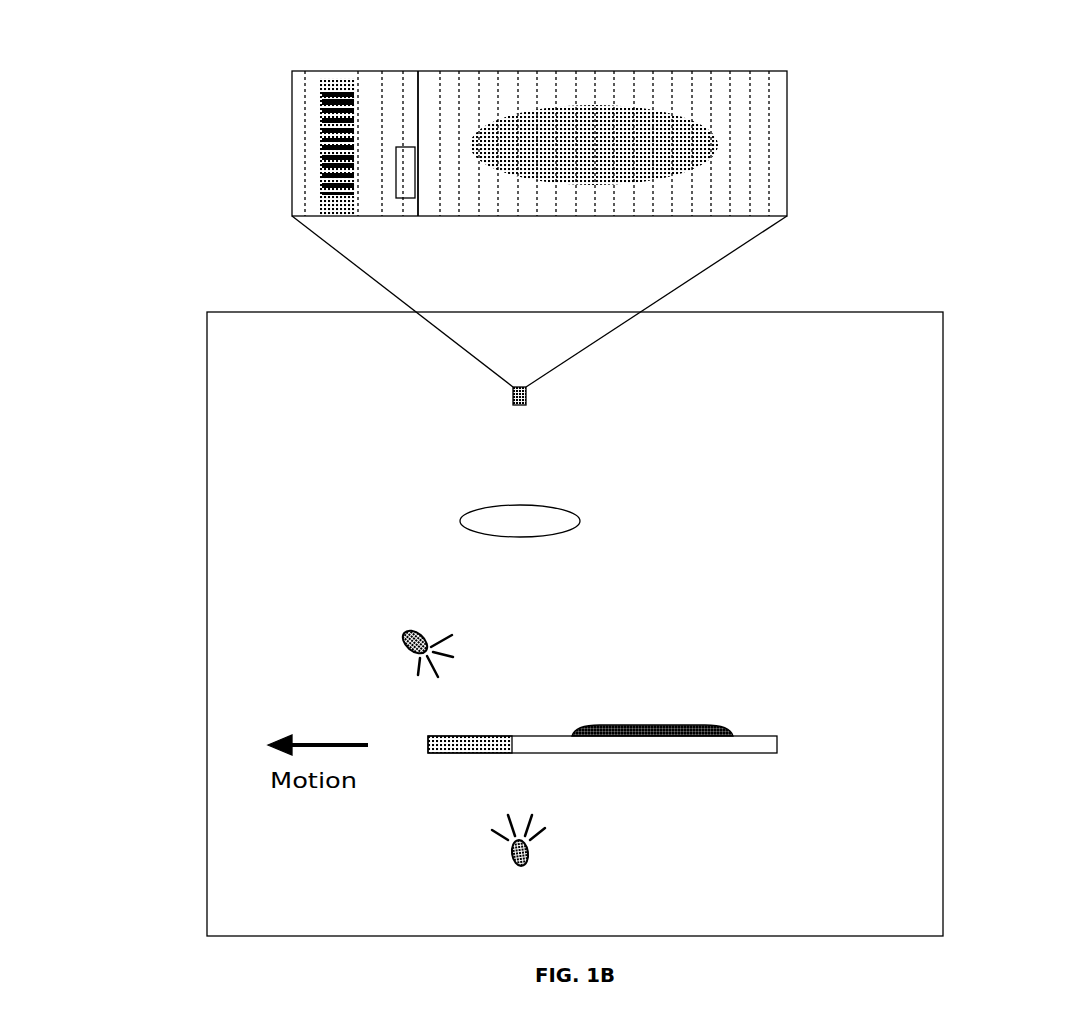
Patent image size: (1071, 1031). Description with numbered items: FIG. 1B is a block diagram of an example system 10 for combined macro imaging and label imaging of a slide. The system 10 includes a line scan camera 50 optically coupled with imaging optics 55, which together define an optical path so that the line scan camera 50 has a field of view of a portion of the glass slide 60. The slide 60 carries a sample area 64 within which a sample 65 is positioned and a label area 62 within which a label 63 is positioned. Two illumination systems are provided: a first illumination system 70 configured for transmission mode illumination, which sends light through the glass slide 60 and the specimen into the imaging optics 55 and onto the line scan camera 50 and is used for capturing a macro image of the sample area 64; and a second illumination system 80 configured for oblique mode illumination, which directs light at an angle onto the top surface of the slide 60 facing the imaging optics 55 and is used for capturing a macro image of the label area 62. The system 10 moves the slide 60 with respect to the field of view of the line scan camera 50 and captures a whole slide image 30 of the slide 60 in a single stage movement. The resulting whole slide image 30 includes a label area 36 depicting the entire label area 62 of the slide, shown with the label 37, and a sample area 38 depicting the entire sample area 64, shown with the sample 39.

The system 10 is at (197, 394).
The whole slide image 30 is at (262, 108).
The label area 36 is at (418, 62).
The label 37 is at (327, 103).
The sample area 38 is at (787, 62).
The sample 39 is at (650, 137).
The line scan camera 50 is at (530, 400).
The imaging optics 55 is at (570, 507).
The glass slide 60 is at (790, 744).
The label area 62 is at (510, 731).
The label 63 is at (467, 747).
The sample area 64 is at (777, 769).
The sample 65 is at (667, 732).
The first illumination system 70 is at (510, 866).
The second illumination system 80 is at (397, 635).